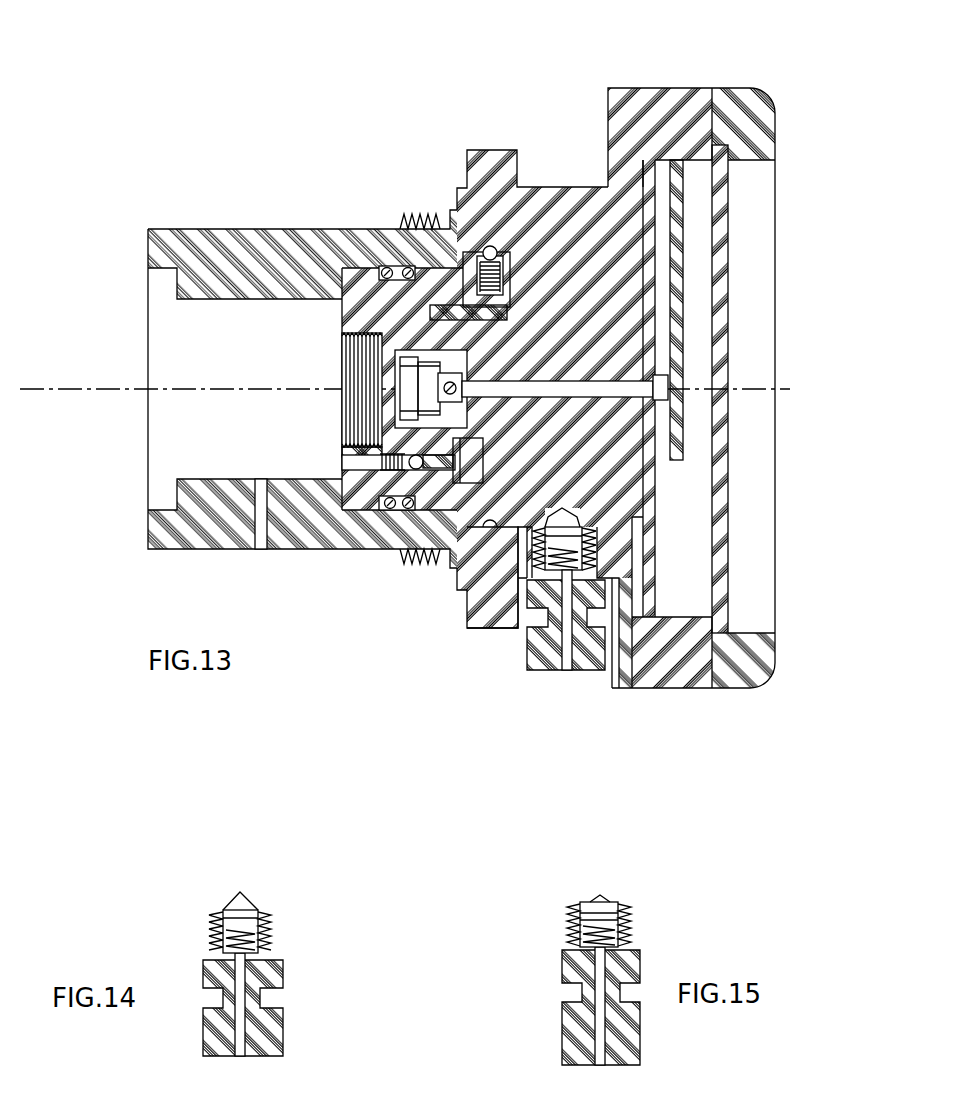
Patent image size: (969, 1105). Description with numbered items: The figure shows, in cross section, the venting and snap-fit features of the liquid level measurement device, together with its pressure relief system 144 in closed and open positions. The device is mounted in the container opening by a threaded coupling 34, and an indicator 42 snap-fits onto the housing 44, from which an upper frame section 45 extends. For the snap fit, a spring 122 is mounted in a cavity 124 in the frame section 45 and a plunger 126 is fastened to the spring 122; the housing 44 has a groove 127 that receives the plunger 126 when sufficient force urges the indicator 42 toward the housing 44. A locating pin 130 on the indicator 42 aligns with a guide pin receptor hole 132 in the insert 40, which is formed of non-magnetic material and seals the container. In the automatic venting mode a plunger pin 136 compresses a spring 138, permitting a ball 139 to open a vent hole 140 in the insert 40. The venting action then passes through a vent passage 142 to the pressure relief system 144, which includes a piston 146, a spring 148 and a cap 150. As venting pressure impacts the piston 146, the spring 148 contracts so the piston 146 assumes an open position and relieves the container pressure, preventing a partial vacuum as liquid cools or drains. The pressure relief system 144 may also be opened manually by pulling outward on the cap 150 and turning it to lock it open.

In FIG. 13, the threaded coupling 34 is at (417, 217).
In FIG. 13, the insert 40 is at (342, 330).
In FIG. 13, the indicator 42 is at (731, 735).
In FIG. 13, the housing 44 is at (247, 229).
In FIG. 13, the upper frame section 45 is at (680, 88).
In FIG. 13, the spring 122 is at (503, 275).
In FIG. 13, the cavity 124 is at (530, 287).
In FIG. 13, the plunger 126 is at (497, 243).
In FIG. 13, the groove 127 is at (473, 240).
In FIG. 13, the locating pin 130 is at (490, 322).
In FIG. 13, the guide pin receptor hole 132 is at (437, 306).
In FIG. 13, the plunger pin 136 is at (490, 532).
In FIG. 13, the spring 138 is at (392, 510).
In FIG. 13, the ball 139 is at (415, 565).
In FIG. 13, the vent hole 140 is at (342, 462).
In FIG. 13, the vent passage 142 is at (555, 465).
In FIG. 13, the pressure relief system 144 is at (531, 706).
In FIG. 14, the pressure relief system 144 is at (298, 919).
In FIG. 15, the pressure relief system 144 is at (655, 910).
In FIG. 13, the piston 146 is at (580, 540).
In FIG. 14, the piston 146 is at (240, 890).
In FIG. 15, the piston 146 is at (599, 921).
In FIG. 13, the spring 148 is at (570, 585).
In FIG. 14, the spring 148 is at (240, 1004).
In FIG. 15, the spring 148 is at (600, 1006).
In FIG. 13, the cap 150 is at (527, 650).
In FIG. 14, the cap 150 is at (287, 1023).
In FIG. 15, the cap 150 is at (562, 1020).